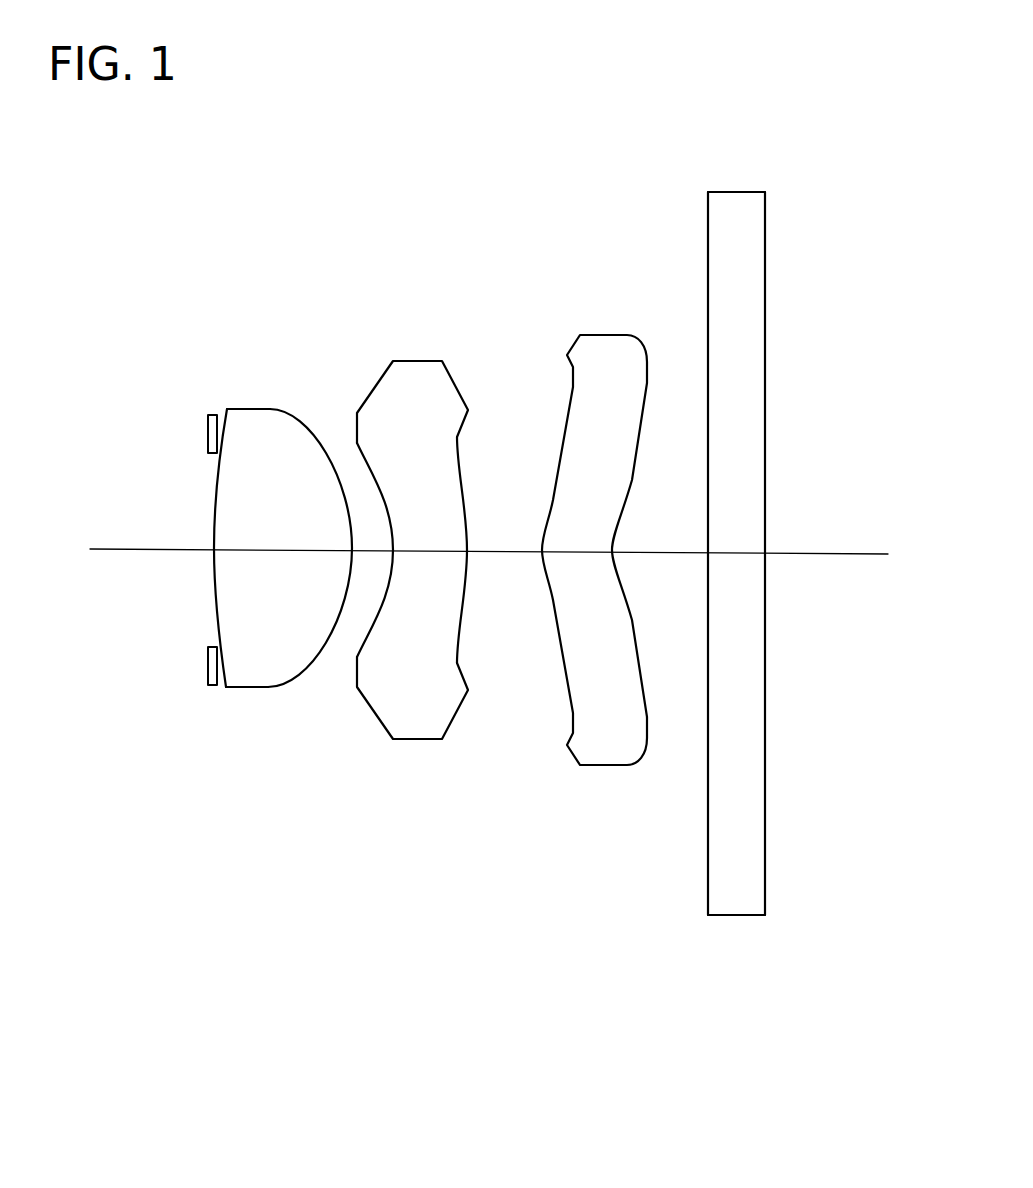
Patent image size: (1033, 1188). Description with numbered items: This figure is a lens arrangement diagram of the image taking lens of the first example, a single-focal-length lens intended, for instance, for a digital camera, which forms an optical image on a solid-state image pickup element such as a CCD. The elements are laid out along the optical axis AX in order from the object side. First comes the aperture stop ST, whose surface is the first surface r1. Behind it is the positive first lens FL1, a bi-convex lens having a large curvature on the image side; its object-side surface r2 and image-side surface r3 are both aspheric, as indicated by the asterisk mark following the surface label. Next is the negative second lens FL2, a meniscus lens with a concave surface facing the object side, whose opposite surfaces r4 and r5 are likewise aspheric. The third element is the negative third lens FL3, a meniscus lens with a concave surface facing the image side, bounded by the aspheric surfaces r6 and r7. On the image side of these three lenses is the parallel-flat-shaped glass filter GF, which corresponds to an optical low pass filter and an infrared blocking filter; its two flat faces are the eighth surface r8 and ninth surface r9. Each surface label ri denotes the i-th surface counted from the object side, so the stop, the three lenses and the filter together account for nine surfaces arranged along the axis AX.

The aperture stop ST is at (138, 550).
The first surface r1 is at (207, 432).
The first lens FL1 is at (272, 534).
The second surface r2 is at (225, 466).
The third surface r3 is at (296, 417).
The second lens FL2 is at (408, 583).
The fourth surface r4 is at (361, 458).
The fifth surface r5 is at (459, 454).
The third lens FL3 is at (601, 557).
The sixth surface r6 is at (568, 378).
The seventh surface r7 is at (648, 378).
The glass filter GF is at (741, 579).
The eighth surface r8 is at (708, 243).
The ninth surface r9 is at (767, 243).
The optical axis AX is at (855, 555).